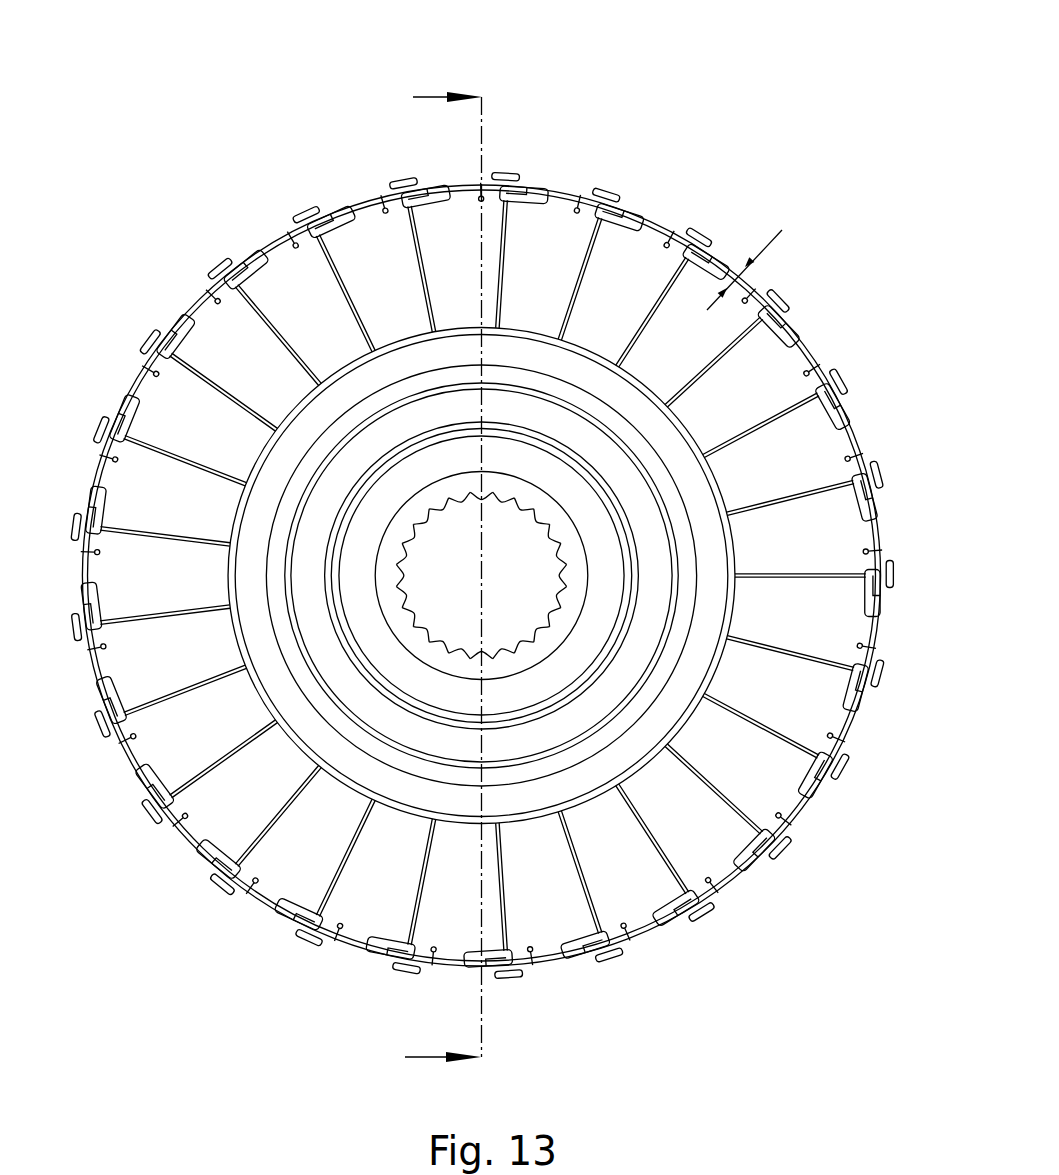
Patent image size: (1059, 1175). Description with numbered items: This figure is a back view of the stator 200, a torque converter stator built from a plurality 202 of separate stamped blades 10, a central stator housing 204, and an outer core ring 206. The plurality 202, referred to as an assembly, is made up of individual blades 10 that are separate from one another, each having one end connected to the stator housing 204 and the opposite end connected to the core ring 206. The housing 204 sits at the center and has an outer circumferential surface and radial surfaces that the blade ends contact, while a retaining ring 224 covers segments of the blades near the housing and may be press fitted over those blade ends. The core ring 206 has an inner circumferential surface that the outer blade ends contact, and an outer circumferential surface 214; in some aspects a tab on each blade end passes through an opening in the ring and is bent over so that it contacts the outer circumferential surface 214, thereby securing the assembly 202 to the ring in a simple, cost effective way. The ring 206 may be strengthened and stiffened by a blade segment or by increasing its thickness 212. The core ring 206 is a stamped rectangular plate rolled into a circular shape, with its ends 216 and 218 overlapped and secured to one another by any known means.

The stator 200 is at (642, 110).
The stamped blade 10 is at (223, 330).
The plurality of stamped blades 202 is at (170, 398).
The stator housing 204 is at (354, 480).
The core ring 206 is at (260, 917).
The thickness 212 is at (763, 245).
The outer circumferential surface 214 is at (803, 810).
The end 216 is at (330, 230).
The end 218 is at (314, 201).
The retaining ring 224 is at (638, 738).